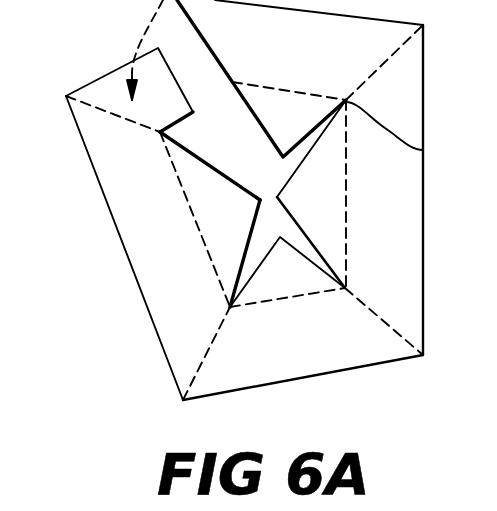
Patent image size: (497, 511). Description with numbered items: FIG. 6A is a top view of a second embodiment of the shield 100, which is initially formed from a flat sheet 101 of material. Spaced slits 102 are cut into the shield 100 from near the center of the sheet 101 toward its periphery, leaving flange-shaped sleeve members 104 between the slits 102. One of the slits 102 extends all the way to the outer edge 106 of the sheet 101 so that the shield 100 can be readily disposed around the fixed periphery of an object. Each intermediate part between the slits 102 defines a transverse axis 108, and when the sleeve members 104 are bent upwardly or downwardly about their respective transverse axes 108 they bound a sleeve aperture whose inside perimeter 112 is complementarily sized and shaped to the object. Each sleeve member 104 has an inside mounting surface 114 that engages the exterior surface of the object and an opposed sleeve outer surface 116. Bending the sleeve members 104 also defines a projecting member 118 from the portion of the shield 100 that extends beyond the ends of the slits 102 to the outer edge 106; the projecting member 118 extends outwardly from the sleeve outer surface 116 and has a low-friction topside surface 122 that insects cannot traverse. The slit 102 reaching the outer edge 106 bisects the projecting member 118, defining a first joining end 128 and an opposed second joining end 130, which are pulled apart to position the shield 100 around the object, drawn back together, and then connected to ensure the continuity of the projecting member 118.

The shield 100 is at (424, 97).
The sheet 101 is at (424, 128).
The slits 102 is at (221, 64).
The sleeve members 104 is at (279, 118).
The outer edge 106 is at (148, 305).
The transverse axis 108 is at (312, 90).
The inside perimeter 112 is at (424, 150).
The inside mounting surface 114 is at (218, 166).
The sleeve outer surface 116 is at (182, 177).
The projecting member 118 is at (112, 218).
The topside surface 122 is at (397, 283).
The first joining end 128 is at (118, 65).
The second joining end 130 is at (203, 38).